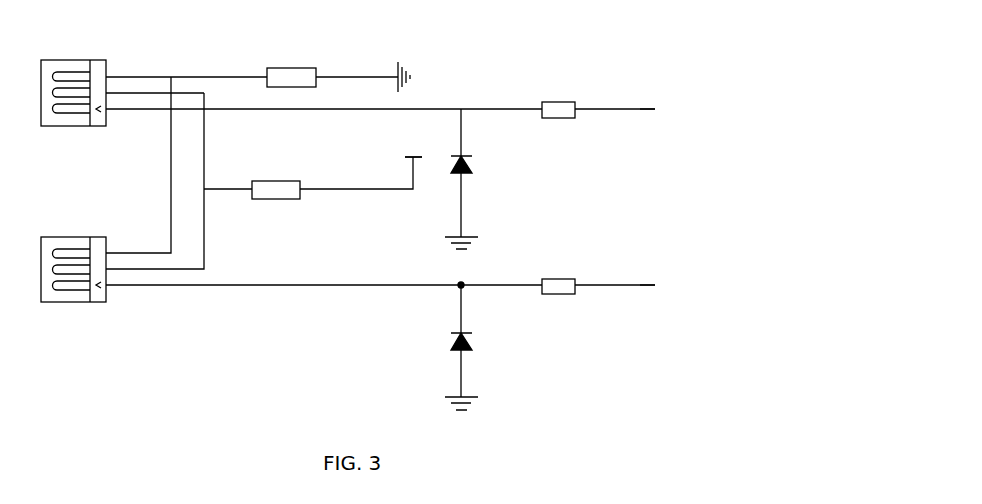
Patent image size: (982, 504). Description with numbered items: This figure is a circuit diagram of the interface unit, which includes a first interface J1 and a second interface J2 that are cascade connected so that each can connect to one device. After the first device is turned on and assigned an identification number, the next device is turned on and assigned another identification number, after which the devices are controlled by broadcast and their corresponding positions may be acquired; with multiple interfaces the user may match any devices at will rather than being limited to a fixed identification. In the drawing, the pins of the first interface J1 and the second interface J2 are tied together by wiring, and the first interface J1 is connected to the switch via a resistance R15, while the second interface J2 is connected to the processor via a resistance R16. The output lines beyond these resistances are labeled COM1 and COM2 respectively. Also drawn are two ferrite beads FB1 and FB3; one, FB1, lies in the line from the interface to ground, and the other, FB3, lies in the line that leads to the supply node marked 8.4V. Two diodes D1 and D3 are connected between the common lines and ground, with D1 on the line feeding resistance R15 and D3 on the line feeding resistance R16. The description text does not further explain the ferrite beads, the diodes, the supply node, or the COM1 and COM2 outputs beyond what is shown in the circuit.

The first interface J1 is at (73, 105).
The second interface J2 is at (73, 259).
The ferrite bead FB1 is at (291, 86).
The ferrite bead FB3 is at (276, 200).
The resistance R15 is at (558, 101).
The resistance R16 is at (558, 277).
The COM1 output line COM1 is at (624, 100).
The COM2 output line COM2 is at (624, 277).
The diode D1 is at (476, 159).
The diode D3 is at (445, 344).
The 8.4V supply 8.4V is at (410, 147).